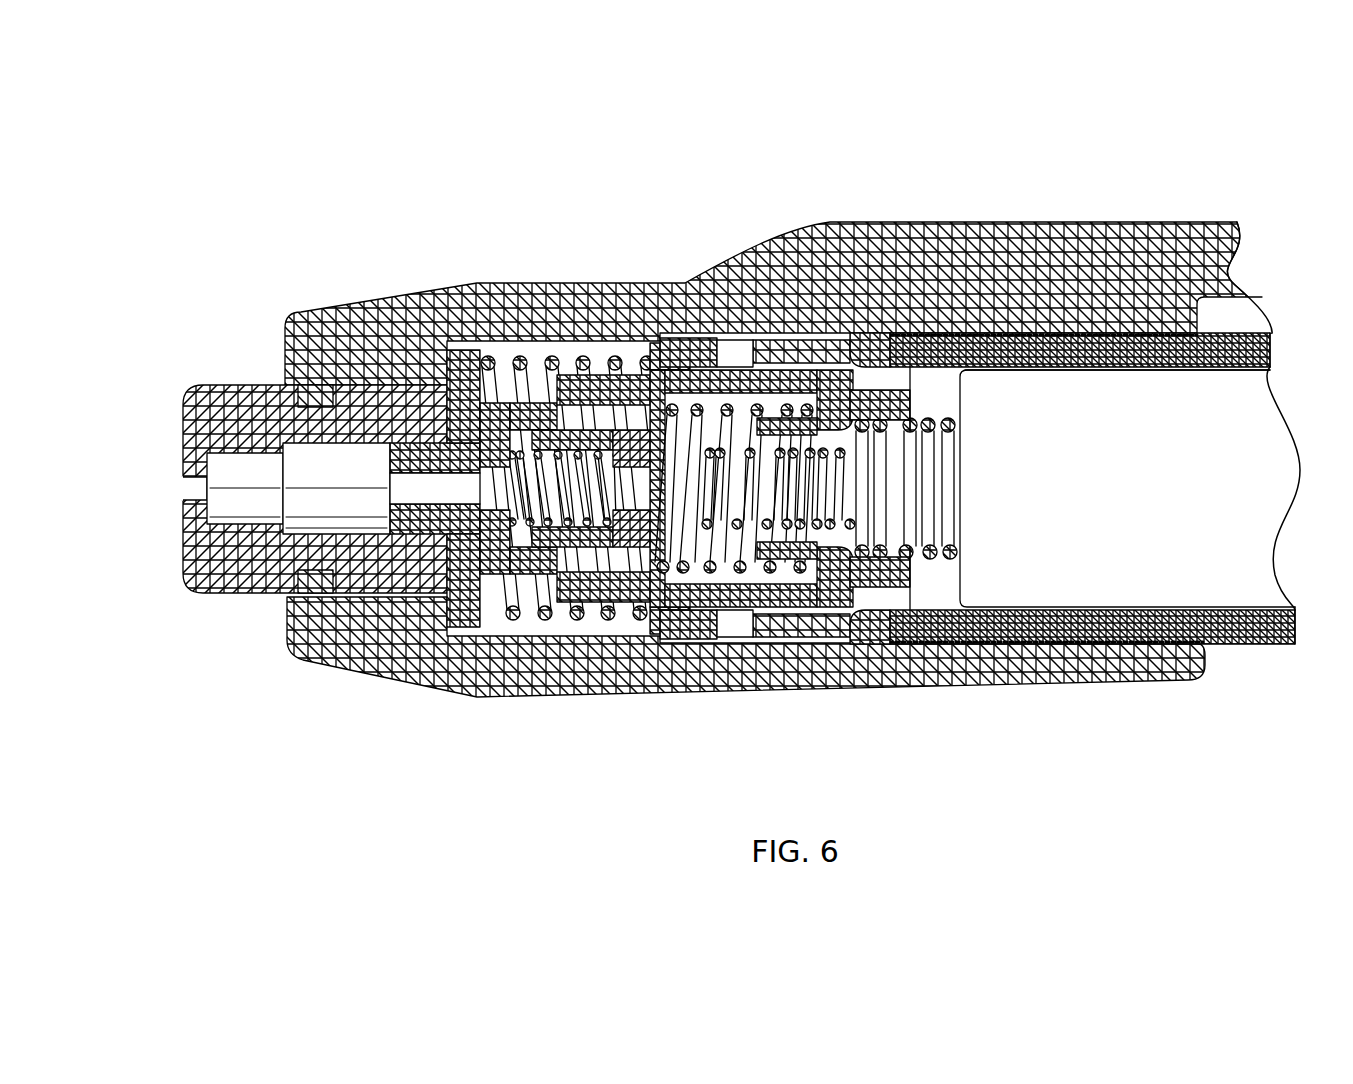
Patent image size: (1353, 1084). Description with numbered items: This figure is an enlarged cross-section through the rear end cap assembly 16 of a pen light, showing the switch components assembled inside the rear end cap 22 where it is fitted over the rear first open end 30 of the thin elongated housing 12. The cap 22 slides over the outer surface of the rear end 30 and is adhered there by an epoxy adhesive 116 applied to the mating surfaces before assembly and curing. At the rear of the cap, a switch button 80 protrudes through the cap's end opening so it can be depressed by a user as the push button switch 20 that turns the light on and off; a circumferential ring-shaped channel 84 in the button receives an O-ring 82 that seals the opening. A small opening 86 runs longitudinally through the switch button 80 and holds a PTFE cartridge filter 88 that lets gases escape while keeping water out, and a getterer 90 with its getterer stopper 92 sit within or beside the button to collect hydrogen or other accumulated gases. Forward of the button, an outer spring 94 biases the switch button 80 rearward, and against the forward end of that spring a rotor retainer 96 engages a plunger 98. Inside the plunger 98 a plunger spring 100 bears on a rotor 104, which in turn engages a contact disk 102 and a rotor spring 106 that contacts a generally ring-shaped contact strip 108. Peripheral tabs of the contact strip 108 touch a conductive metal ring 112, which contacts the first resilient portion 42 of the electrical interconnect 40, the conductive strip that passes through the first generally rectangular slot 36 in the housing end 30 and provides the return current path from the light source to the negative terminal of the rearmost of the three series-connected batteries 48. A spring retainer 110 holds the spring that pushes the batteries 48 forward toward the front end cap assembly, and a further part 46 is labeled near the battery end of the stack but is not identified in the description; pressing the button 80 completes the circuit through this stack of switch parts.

The housing 12 is at (1250, 333).
The rear end cap assembly 16 is at (463, 255).
The push button switch 20 is at (155, 596).
The rear end cap 22 is at (1005, 222).
The rear first open end 30 is at (738, 338).
The first generally rectangular slot 36 is at (870, 333).
The electrical interconnect 40 is at (1243, 371).
The first resilient portion 42 is at (820, 338).
The spring seat 46 is at (933, 590).
The batteries 48 is at (1127, 488).
The switch button 80 is at (240, 384).
The O-ring 82 is at (318, 383).
The circumferential ring-shaped channel 84 is at (313, 388).
The small opening 86 is at (193, 490).
The PTFE cartridge filter 88 is at (240, 512).
The getterer 90 is at (305, 577).
The getterer stopper 92 is at (440, 598).
The outer spring 94 is at (520, 357).
The rotor retainer 96 is at (598, 358).
The plunger 98 is at (514, 621).
The plunger spring 100 is at (530, 548).
The contact disk 102 is at (640, 606).
The rotor 104 is at (641, 357).
The rotor spring 106 is at (705, 334).
The contact strip 108 is at (773, 610).
The spring retainer 110 is at (820, 590).
The conductive metal ring 112 is at (793, 340).
The epoxy adhesive 116 is at (1107, 331).